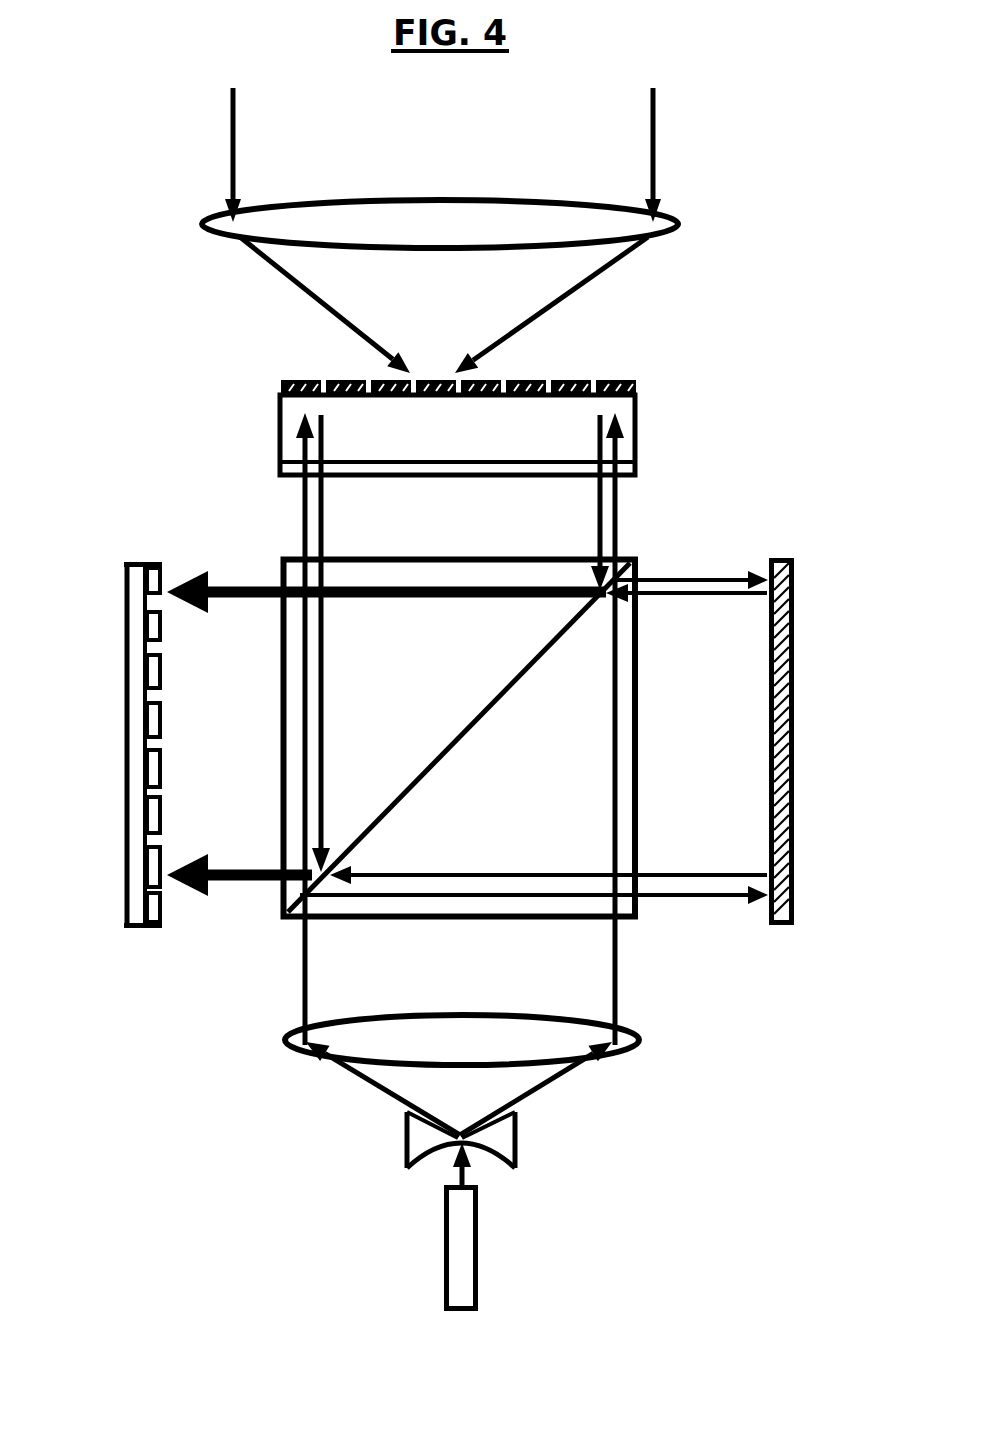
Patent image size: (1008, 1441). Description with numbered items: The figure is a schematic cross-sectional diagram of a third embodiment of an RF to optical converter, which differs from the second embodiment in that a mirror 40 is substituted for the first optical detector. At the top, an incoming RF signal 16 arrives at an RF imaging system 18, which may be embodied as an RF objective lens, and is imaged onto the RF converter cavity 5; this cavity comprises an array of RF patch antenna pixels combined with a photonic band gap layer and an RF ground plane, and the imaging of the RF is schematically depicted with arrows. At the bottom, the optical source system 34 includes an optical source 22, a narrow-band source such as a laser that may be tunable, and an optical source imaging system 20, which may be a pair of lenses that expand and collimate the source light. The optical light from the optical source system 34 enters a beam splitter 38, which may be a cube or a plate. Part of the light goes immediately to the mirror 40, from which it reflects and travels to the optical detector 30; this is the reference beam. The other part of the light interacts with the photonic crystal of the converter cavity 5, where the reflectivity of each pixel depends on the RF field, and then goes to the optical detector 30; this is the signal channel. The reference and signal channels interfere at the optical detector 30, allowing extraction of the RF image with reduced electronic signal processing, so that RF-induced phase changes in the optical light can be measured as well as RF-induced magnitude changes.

The incoming RF signal 16 is at (467, 165).
The RF imaging system 18 is at (653, 236).
The RF converter cavity 5 is at (268, 383).
The beam splitter 38 is at (452, 745).
The optical detector 30 is at (94, 740).
The mirror 40 is at (797, 744).
The optical source system 34 is at (282, 1018).
The optical source imaging system 20 is at (633, 1047).
The optical source 22 is at (482, 1278).